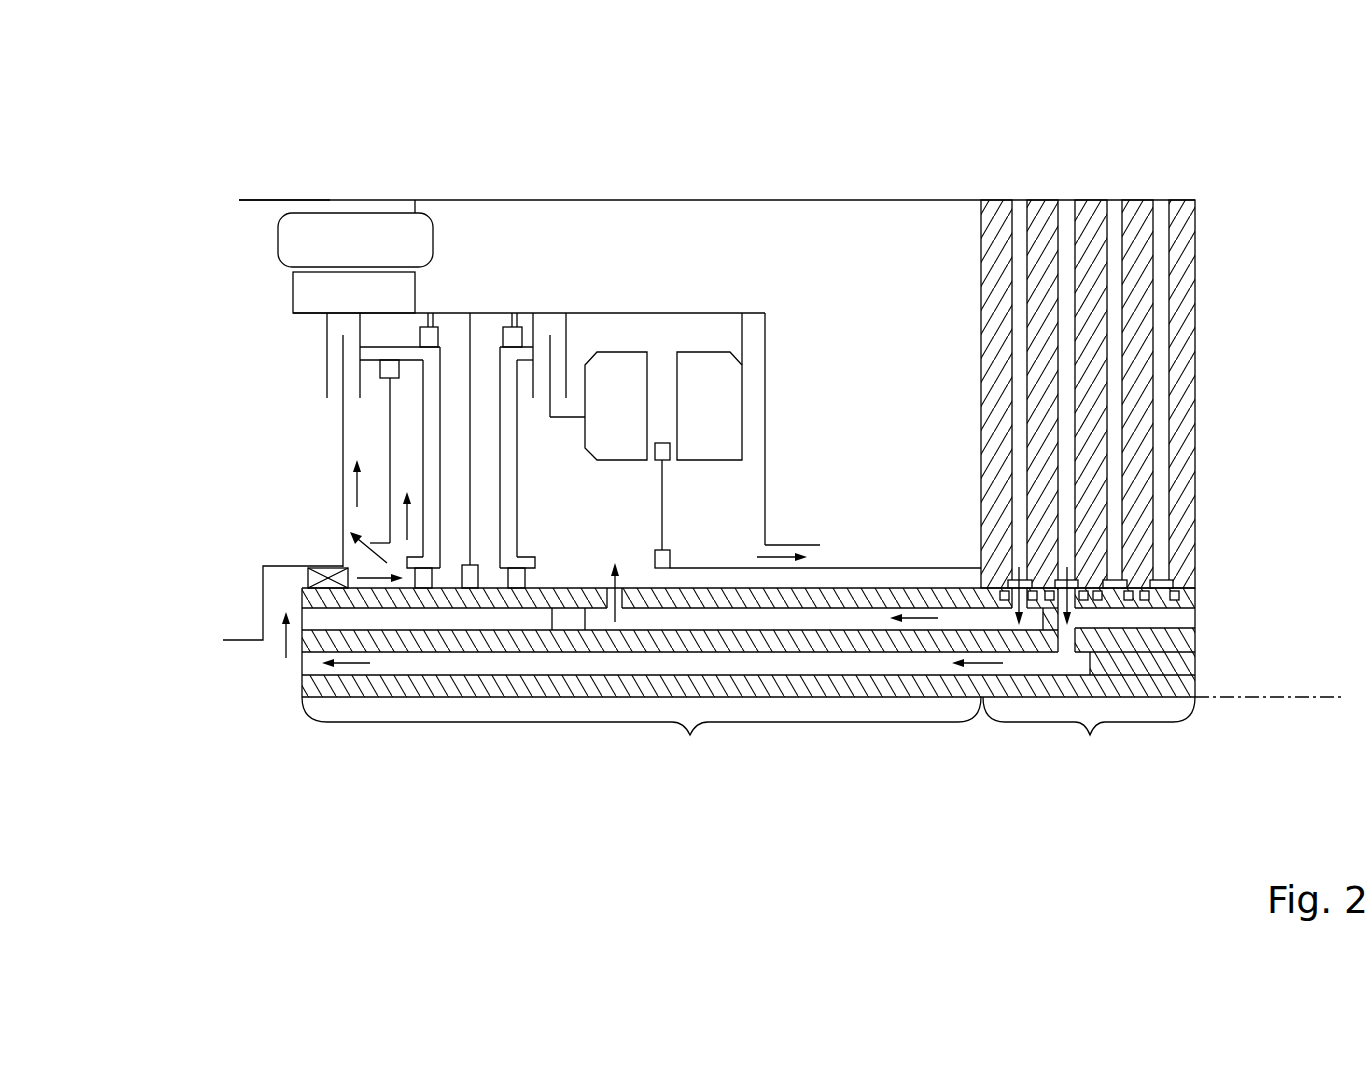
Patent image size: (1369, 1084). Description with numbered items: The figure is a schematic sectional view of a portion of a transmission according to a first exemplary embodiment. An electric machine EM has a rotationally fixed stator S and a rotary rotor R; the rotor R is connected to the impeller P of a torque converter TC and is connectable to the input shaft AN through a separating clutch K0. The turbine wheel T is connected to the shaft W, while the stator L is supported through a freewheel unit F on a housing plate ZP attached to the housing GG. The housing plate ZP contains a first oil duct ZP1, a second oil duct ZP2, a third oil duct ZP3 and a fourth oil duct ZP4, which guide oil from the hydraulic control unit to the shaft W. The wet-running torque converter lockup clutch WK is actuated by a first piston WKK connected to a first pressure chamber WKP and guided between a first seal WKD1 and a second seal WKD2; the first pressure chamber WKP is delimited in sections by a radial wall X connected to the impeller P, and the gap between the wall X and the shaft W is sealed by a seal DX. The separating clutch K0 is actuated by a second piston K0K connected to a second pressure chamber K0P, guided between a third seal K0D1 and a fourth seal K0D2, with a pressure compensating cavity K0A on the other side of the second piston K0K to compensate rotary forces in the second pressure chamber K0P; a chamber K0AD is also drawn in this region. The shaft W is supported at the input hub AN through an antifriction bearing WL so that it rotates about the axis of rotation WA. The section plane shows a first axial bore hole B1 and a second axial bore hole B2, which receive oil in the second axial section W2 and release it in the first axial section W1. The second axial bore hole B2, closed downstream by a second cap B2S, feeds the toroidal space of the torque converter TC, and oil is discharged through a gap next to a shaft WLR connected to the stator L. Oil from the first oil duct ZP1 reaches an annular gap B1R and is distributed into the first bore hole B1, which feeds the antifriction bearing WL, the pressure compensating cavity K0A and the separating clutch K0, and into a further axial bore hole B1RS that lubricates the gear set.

The electric machine EM is at (306, 182).
The stator S is at (292, 240).
The rotor R is at (305, 295).
The housing GG is at (375, 197).
The separating clutch K0 is at (305, 347).
The separating clutch actuating pressure chamber K0AD is at (388, 372).
The pressure compensating cavity K0A is at (403, 412).
The second piston K0K is at (432, 447).
The second pressure chamber K0P is at (457, 485).
The third seal K0D1 is at (430, 327).
The fourth seal K0D2 is at (427, 588).
The antifriction bearing WL is at (327, 567).
The input shaft AN is at (242, 640).
The radial wall X is at (483, 367).
The seal DX is at (470, 588).
The first pressure chamber WKP is at (520, 327).
The first seal WKD1 is at (568, 290).
The second seal WKD2 is at (517, 588).
The first piston WKK is at (500, 570).
The torque converter lockup clutch WK is at (618, 362).
The turbine wheel T is at (662, 440).
The stator L is at (718, 370).
The impeller P is at (796, 372).
The torque converter TC is at (953, 230).
The freewheel unit F is at (672, 566).
The housing plate ZP is at (993, 217).
The first oil duct ZP1 is at (1067, 212).
The second oil duct ZP2 is at (1018, 217).
The third oil duct ZP3 is at (1113, 262).
The fourth oil duct ZP4 is at (1160, 320).
The annular gap B1R is at (1107, 545).
The further axial bore hole B1RS is at (1170, 618).
The first axial bore hole B1 is at (1080, 662).
The shaft W is at (302, 682).
The axis of rotation WA is at (1215, 700).
The first axial section W1 is at (641, 745).
The second axial section W2 is at (1089, 745).
The second cap B2S is at (617, 626).
The second axial bore hole B2 is at (810, 618).
The shaft WLR is at (833, 570).